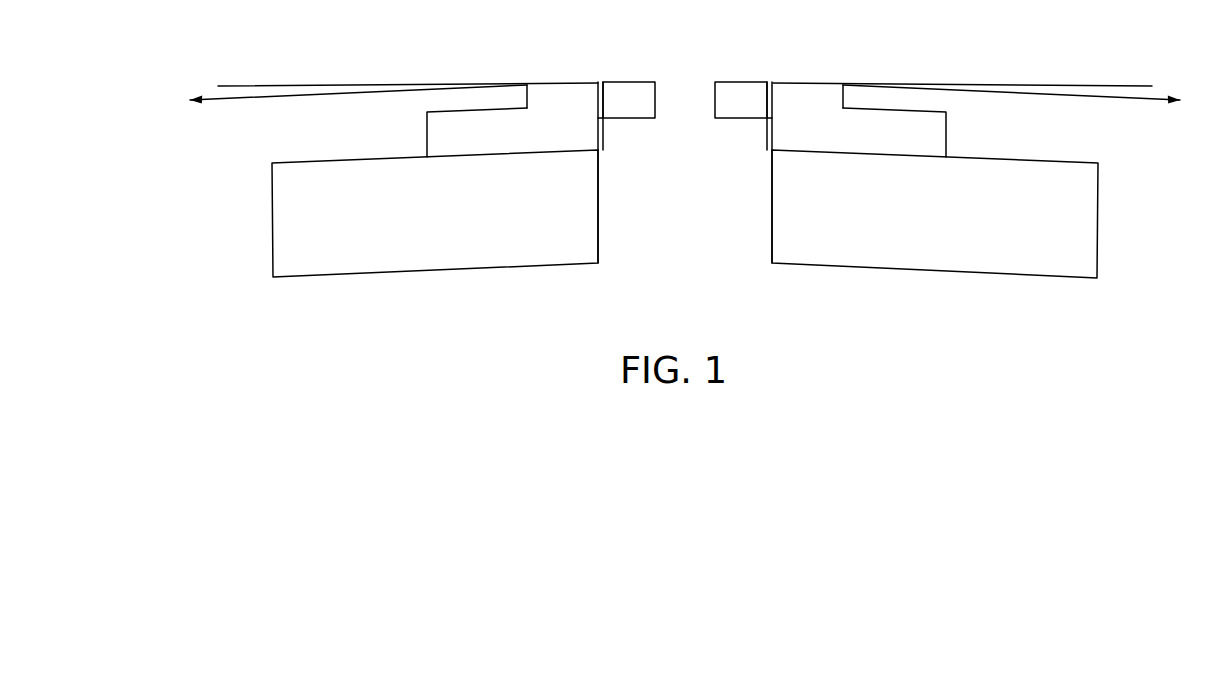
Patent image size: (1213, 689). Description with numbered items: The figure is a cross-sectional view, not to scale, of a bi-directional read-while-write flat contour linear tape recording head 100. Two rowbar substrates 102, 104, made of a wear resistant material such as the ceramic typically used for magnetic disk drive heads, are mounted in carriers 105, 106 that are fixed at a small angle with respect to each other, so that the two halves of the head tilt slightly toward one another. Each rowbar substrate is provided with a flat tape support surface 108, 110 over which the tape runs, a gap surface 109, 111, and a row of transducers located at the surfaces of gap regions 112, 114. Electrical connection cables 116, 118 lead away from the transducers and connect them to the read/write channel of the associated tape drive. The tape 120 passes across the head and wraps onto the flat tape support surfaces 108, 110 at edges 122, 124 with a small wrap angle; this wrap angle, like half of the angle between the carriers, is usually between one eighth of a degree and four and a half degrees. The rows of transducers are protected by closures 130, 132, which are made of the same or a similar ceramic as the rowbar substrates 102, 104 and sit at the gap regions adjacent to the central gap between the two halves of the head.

The bi-directional read-while-write flat contour head 100 is at (953, 322).
The rowbar substrate 102 is at (427, 116).
The rowbar substrate 104 is at (946, 127).
The carrier 105 is at (272, 225).
The carrier 106 is at (1097, 220).
The flat tape support surface 108 is at (567, 83).
The gap surface 109 is at (598, 110).
The flat tape support surface 110 is at (802, 83).
The gap surface 111 is at (775, 108).
The gap region 112 is at (600, 82).
The gap region 114 is at (775, 82).
The electrical connection cable 116 is at (603, 150).
The electrical connection cable 118 is at (767, 150).
The tape 120 is at (305, 97).
The edge 122 is at (527, 84).
The edge 124 is at (843, 84).
The closure 130 is at (650, 82).
The closure 132 is at (716, 82).